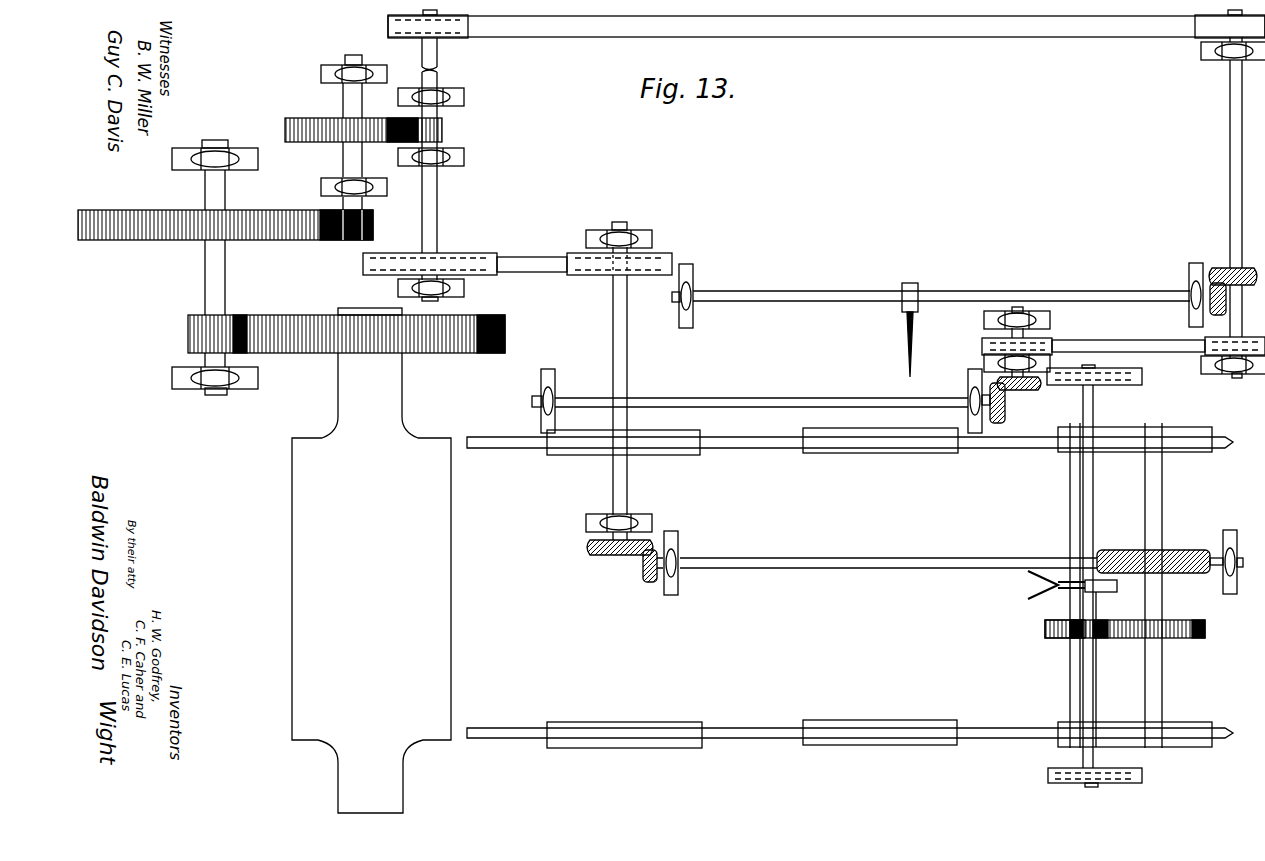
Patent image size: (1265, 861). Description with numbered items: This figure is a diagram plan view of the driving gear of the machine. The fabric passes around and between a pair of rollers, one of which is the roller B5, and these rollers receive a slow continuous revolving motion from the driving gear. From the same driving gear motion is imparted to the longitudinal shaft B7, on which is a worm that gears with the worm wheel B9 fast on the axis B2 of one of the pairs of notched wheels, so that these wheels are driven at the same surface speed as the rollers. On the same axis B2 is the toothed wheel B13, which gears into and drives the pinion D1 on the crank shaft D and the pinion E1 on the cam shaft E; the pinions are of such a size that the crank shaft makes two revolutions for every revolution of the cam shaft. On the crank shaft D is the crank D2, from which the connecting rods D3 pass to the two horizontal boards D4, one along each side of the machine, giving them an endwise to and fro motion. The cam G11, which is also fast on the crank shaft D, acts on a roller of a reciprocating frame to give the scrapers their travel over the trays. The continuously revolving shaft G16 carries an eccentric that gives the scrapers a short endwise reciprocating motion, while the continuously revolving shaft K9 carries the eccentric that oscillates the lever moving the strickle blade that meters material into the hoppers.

The roller B5 is at (346, 560).
The longitudinal shaft B7 is at (842, 563).
The continuously revolving shaft K9 is at (867, 282).
The continuously revolving shaft G16 is at (792, 394).
The cam G11 is at (1142, 378).
The crank shaft D is at (1093, 495).
The horizontal board D4 is at (768, 445).
The cam shaft E is at (1073, 510).
The axis B2 is at (1160, 480).
The worm wheel B9 is at (1173, 549).
The connecting rod D3 is at (1044, 585).
The crank D2 is at (1110, 592).
The pinion D1 is at (1100, 636).
The toothed wheel B13 is at (1193, 638).
The pinion E1 is at (1045, 629).